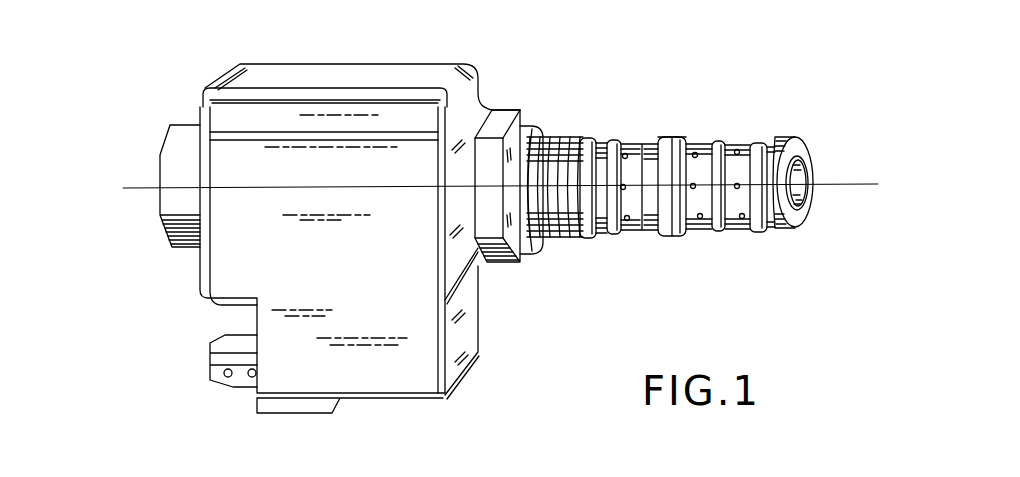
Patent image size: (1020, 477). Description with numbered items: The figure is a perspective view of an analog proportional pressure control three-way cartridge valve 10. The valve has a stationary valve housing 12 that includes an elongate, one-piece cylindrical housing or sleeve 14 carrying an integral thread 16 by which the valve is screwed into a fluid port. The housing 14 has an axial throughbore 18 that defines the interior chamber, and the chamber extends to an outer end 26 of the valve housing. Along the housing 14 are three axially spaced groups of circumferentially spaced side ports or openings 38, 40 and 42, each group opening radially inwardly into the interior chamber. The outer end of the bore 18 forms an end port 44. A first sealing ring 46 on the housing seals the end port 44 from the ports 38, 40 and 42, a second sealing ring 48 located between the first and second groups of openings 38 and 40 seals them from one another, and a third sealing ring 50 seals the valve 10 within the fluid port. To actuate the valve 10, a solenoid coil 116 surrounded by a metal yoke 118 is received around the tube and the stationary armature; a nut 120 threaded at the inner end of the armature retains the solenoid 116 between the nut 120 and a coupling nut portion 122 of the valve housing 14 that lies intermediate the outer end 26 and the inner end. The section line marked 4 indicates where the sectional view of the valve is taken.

The section line 4- 4 is at (134, 160).
The cartridge valve 10 is at (712, 55).
The valve housing 12 is at (530, 92).
The housing 14 is at (622, 138).
The thread 16 is at (560, 238).
The axial throughbore 18 is at (803, 168).
The outer end 26 is at (792, 150).
The side ports 38 is at (627, 230).
The side ports 40 is at (705, 228).
The side ports 42 is at (753, 228).
The end port 44 is at (807, 212).
The first sealing ring 46 is at (770, 228).
The second sealing ring 48 is at (673, 232).
The third sealing ring 50 is at (540, 122).
The solenoid coil 116 is at (413, 385).
The metal yoke 118 is at (403, 70).
The nut 120 is at (180, 252).
The coupling nut portion 122 is at (500, 266).